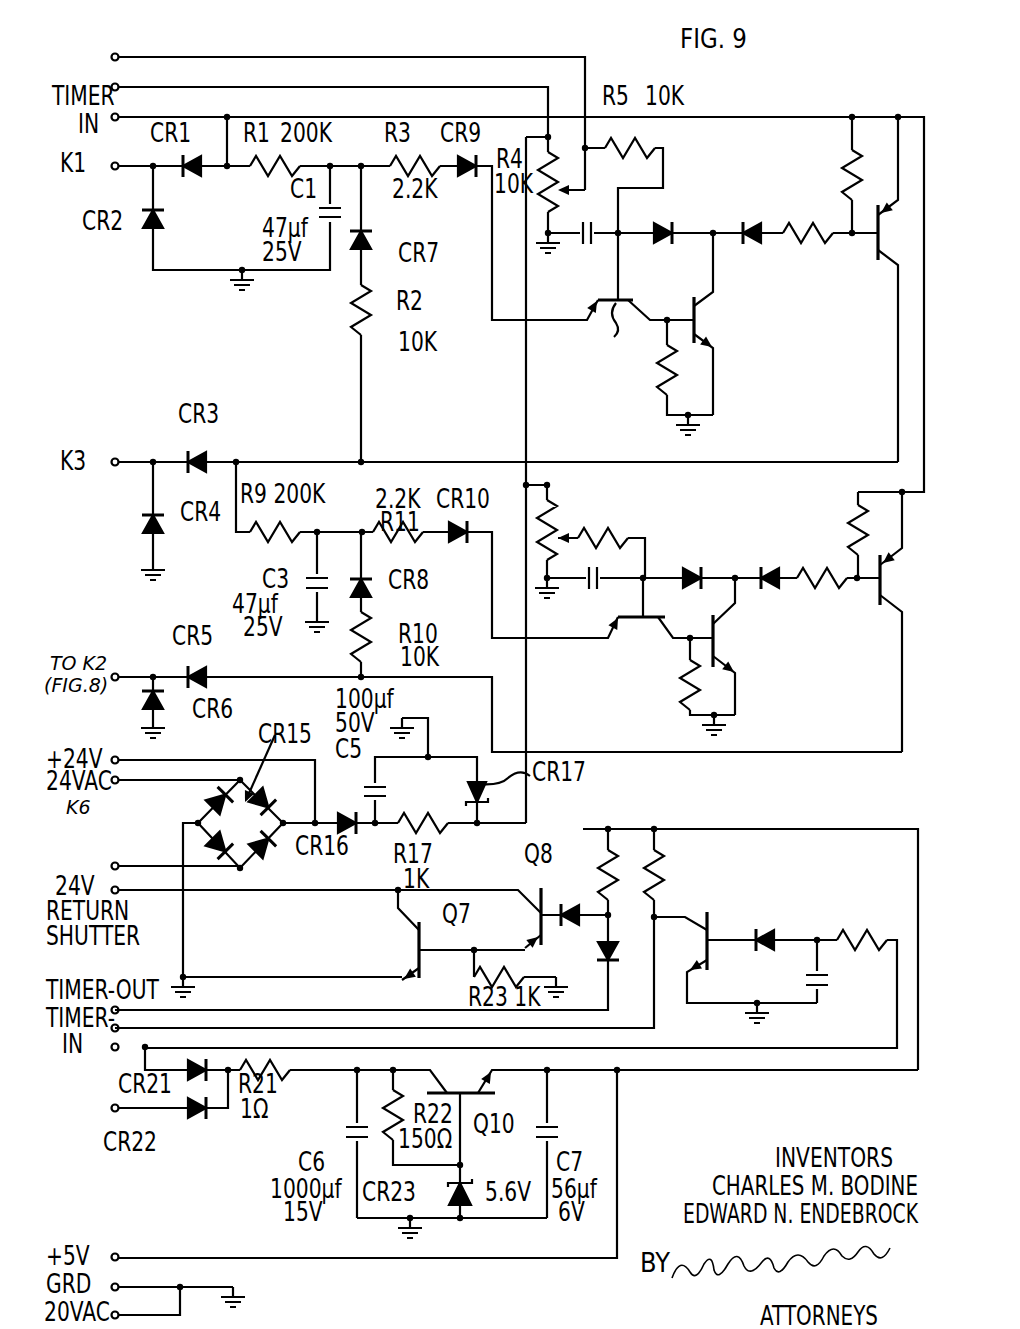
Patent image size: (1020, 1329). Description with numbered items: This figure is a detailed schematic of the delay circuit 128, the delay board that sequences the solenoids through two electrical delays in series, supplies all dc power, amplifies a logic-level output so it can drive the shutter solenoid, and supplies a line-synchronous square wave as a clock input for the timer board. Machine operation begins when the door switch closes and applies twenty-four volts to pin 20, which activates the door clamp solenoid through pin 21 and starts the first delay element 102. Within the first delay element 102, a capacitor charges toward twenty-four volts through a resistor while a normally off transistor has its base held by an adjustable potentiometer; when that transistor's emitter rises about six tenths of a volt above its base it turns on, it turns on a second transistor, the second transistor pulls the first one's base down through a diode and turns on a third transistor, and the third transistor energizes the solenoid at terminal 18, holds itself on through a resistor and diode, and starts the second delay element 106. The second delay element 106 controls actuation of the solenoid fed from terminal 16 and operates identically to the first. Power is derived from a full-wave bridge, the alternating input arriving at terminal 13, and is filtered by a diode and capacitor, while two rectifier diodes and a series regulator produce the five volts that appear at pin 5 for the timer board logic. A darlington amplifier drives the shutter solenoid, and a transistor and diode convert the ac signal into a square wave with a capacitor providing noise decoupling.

The pin 5 is at (115, 1257).
The 24 VAC input terminal (K6) 13 is at (115, 784).
The terminal to K2 16 is at (118, 675).
The K3 terminal 18 is at (116, 461).
The pin 20 is at (115, 117).
The pin 21 is at (124, 157).
The first delay element 102 is at (812, 367).
The second delay element 106 is at (819, 700).
The delay circuit 128 is at (736, 796).